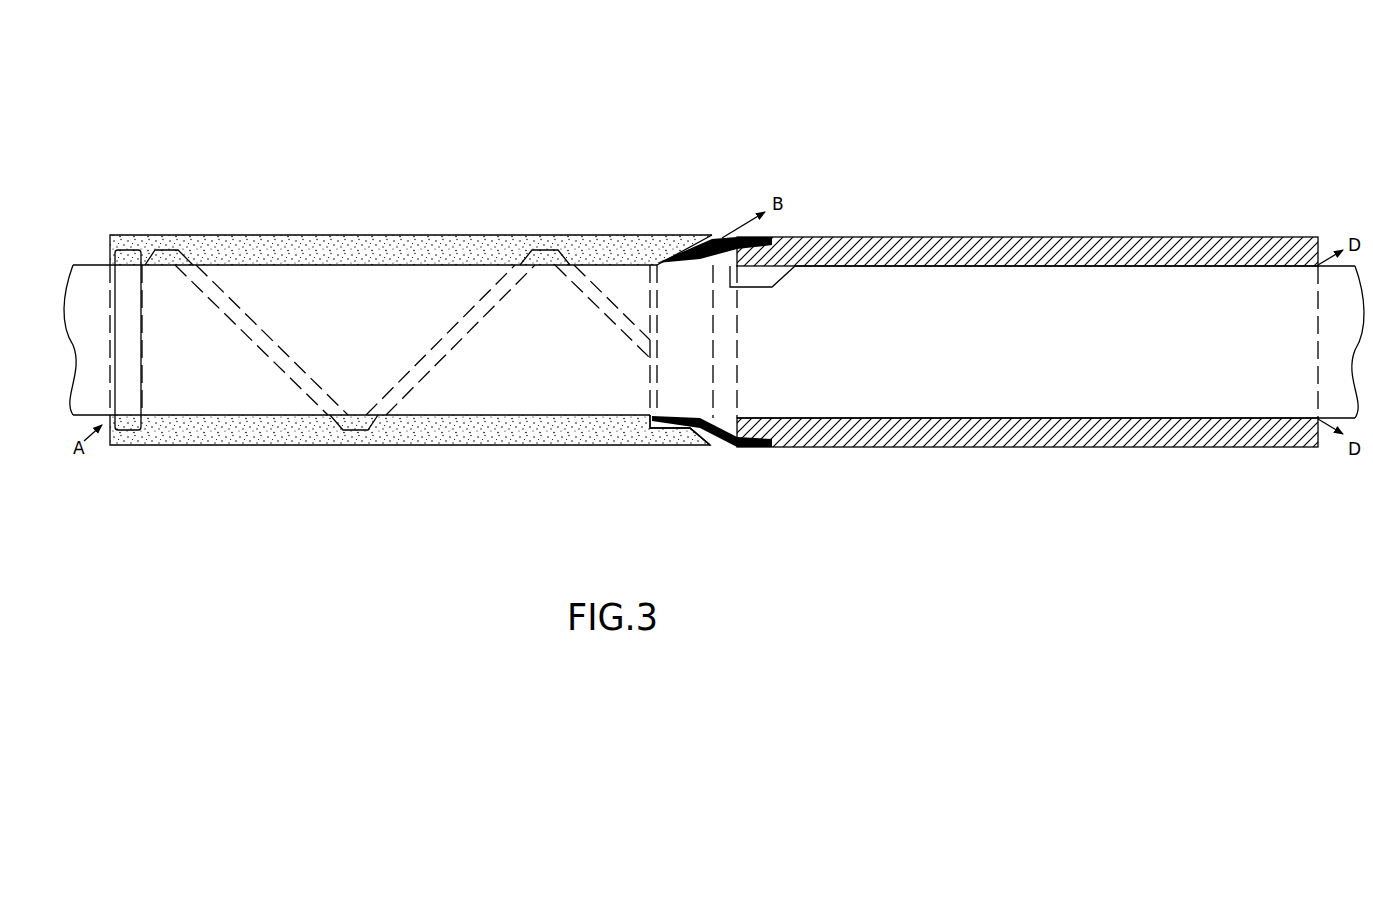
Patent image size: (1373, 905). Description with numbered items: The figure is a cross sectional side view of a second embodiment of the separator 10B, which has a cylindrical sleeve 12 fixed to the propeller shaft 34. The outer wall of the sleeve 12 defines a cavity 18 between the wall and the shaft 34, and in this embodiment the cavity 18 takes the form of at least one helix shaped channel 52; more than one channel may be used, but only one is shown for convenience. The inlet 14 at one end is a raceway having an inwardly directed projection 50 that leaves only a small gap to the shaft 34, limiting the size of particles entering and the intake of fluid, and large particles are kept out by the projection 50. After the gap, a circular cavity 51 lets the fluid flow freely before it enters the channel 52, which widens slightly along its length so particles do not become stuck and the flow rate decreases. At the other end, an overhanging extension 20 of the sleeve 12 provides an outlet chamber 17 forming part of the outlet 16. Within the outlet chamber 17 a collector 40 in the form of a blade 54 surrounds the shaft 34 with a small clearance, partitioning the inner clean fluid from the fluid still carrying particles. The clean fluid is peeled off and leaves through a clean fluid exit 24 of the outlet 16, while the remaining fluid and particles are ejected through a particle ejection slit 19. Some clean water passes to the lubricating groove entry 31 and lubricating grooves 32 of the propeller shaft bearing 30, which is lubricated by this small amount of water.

The separator 10B is at (187, 99).
The sleeve 12 is at (192, 430).
The inlet 14 is at (103, 258).
The outlet 16 is at (680, 450).
The outlet chamber 17 is at (648, 418).
The cavity 18 is at (352, 445).
The particle ejection slit 19 is at (720, 448).
The overhanging extension 20 is at (697, 445).
The clean fluid exit 24 is at (778, 447).
The propeller shaft bearing 30 is at (1270, 447).
The lubricating groove entry 31 is at (800, 262).
The lubricating grooves 32 is at (1020, 447).
The propeller shaft 34 is at (1045, 345).
The collector 40 is at (705, 232).
The inwardly directed projection 50 is at (109, 258).
The circular cavity 51 is at (133, 258).
The helix shaped channel 52 is at (470, 316).
The blade 54 is at (655, 262).